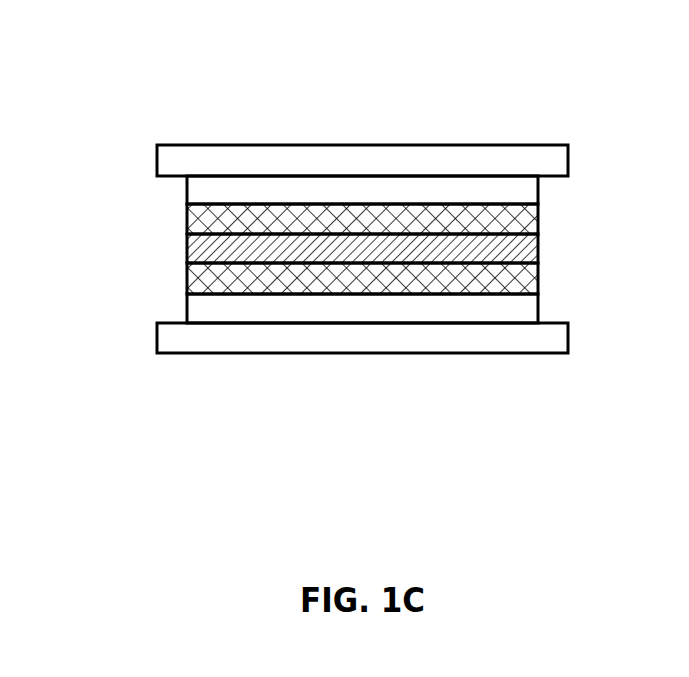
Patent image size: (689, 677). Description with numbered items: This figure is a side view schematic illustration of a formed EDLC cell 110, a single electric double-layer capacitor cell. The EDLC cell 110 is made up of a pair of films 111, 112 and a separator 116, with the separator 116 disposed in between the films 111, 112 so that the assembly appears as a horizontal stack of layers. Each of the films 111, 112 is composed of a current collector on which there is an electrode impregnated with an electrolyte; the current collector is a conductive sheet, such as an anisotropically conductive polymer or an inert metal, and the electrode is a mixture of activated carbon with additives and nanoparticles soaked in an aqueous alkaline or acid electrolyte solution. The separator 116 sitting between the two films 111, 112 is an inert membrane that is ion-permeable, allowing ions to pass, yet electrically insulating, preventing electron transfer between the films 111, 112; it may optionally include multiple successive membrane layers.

The EDLC cell 110 is at (174, 71).
The film 111 is at (72, 145).
The film 112 is at (72, 263).
The separator 116 is at (186, 249).